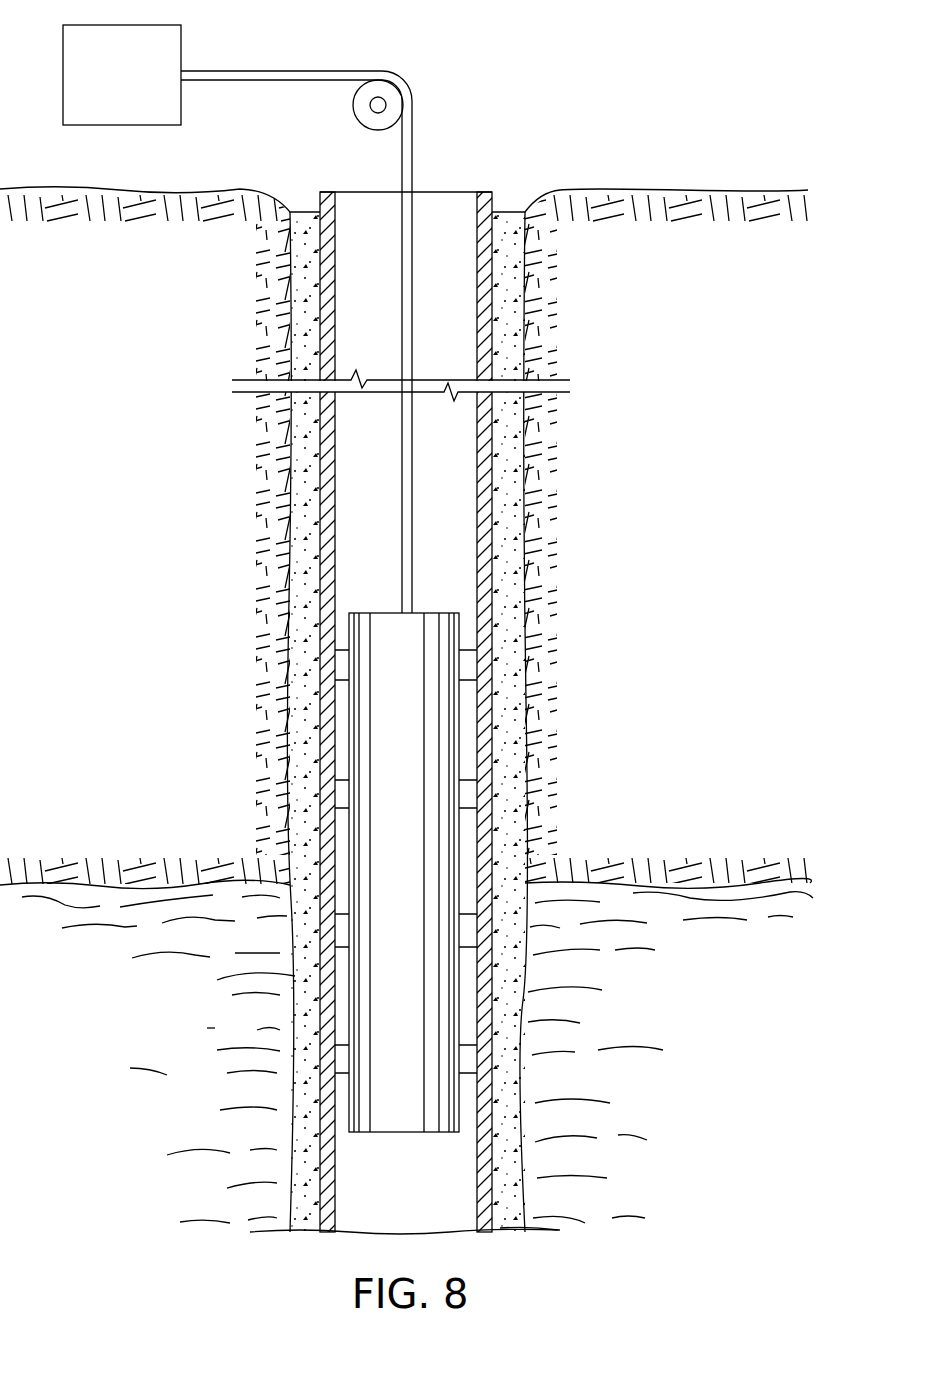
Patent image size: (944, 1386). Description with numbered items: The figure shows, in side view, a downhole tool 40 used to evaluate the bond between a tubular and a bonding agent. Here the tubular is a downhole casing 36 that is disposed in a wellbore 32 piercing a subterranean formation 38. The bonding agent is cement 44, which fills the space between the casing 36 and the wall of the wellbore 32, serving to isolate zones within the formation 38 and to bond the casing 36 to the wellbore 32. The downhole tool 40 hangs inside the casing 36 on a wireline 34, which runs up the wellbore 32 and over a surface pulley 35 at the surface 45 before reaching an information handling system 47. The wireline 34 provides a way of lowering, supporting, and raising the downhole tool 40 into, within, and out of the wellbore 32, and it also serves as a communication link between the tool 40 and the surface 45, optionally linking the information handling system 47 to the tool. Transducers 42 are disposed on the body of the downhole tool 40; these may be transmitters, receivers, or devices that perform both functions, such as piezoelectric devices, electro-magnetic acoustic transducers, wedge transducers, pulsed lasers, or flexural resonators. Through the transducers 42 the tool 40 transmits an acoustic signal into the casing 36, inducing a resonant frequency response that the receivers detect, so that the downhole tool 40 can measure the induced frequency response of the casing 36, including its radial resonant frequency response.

The wellbore 32 is at (446, 169).
The wireline 34 is at (231, 71).
The surface pulley 35 is at (353, 108).
The downhole casing 36 is at (492, 275).
The subterranean formation 38 is at (180, 485).
The downhole tool 40 is at (449, 625).
The transducers 42 is at (468, 790).
The cement 44 is at (417, 1061).
The surface 45 is at (641, 169).
The information handling system 47 is at (110, 86).